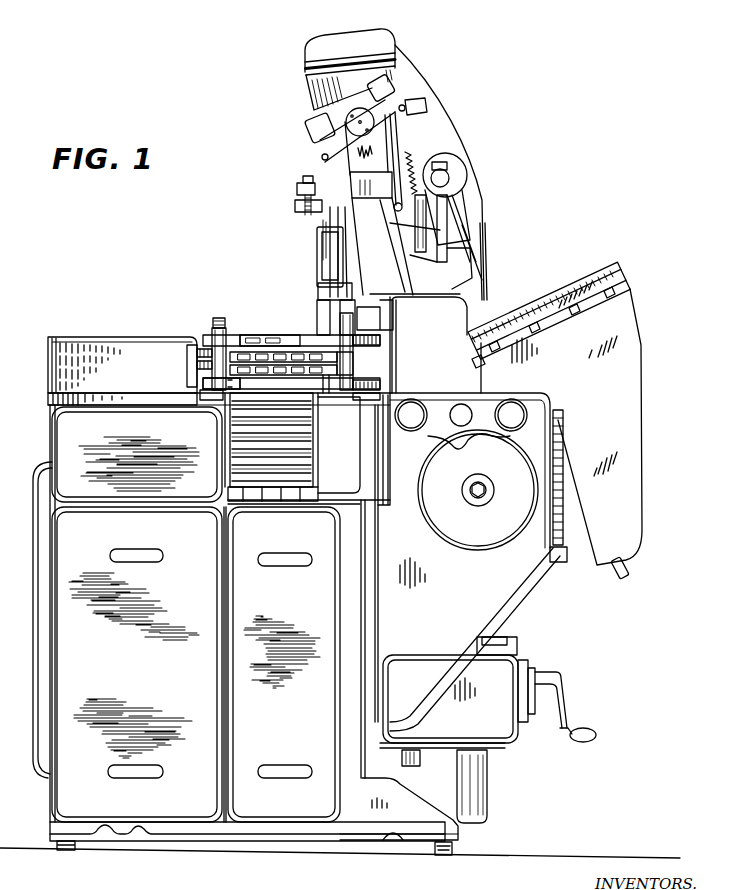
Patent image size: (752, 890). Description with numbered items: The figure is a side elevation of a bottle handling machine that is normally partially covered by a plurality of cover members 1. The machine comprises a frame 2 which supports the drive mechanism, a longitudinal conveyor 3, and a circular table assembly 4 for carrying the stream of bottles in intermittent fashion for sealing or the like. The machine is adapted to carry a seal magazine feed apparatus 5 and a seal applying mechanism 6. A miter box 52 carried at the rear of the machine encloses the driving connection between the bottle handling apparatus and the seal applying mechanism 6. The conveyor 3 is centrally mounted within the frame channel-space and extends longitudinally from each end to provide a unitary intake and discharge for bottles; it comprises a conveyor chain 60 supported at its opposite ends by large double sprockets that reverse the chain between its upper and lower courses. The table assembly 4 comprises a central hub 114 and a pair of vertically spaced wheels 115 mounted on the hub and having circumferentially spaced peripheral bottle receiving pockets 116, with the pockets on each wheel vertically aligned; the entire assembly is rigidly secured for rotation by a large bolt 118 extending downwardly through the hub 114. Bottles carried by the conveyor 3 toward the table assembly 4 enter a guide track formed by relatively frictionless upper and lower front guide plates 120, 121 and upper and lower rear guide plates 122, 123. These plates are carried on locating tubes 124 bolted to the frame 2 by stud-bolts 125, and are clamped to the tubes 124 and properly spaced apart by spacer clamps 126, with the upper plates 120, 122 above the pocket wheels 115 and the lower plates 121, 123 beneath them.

The cover members 1 is at (65, 546).
The frame 2 is at (232, 838).
The longitudinal conveyor 3 is at (287, 493).
The circular table assembly 4 is at (284, 328).
The seal magazine feed apparatus 5 is at (530, 271).
The seal applying mechanism 6 is at (303, 147).
The miter box 52 is at (507, 732).
The conveyor chain 60 is at (250, 435).
The central hub 114 is at (205, 357).
The wheels 115 is at (295, 351).
The bottle receiving pockets 116 is at (324, 386).
The large bolt 118 is at (206, 343).
The upper front guide plate 120 is at (233, 337).
The lower front guide plate 121 is at (203, 380).
The upper rear guide plate 122 is at (380, 338).
The lower rear guide plate 123 is at (360, 395).
The locating tubes 124 is at (355, 361).
The stud-bolts 125 is at (218, 318).
The spacer clamps 126 is at (347, 346).